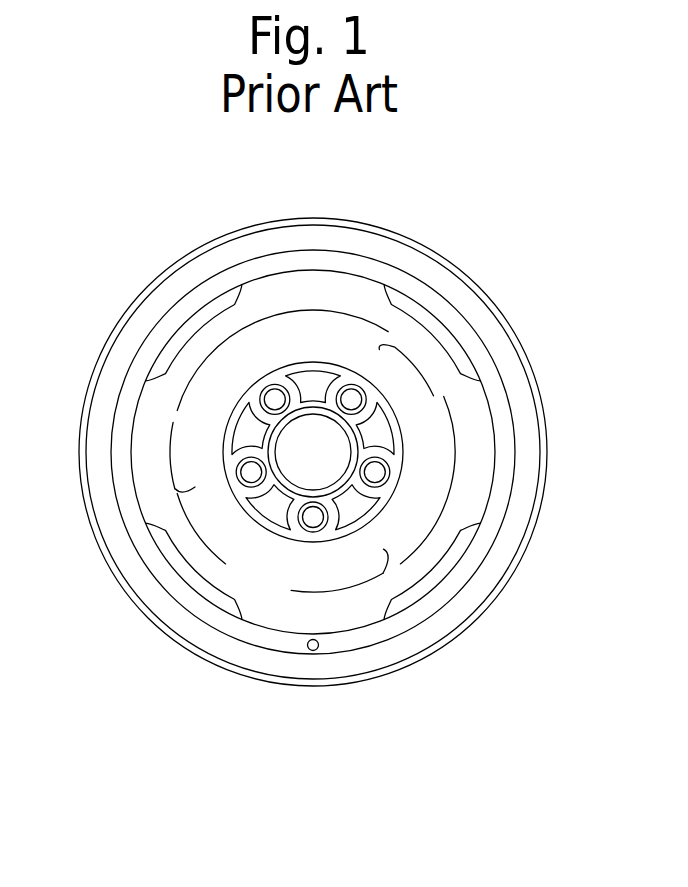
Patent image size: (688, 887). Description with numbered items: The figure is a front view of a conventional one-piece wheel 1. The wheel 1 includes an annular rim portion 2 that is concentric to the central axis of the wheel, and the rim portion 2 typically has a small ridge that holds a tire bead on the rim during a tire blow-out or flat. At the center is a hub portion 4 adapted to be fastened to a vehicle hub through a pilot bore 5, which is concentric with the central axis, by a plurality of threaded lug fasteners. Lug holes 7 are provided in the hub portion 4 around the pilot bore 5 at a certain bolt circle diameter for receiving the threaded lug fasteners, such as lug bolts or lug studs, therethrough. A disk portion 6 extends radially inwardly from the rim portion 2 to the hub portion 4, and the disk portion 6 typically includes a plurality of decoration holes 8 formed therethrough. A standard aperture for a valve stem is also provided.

The one-piece wheel 1 is at (549, 232).
The annular rim portion 2 is at (445, 648).
The hub portion 4 is at (307, 380).
The pilot bore 5 is at (287, 449).
The disk portion 6 is at (220, 558).
The lug holes 7 is at (268, 398).
The decoration holes 8 is at (173, 350).